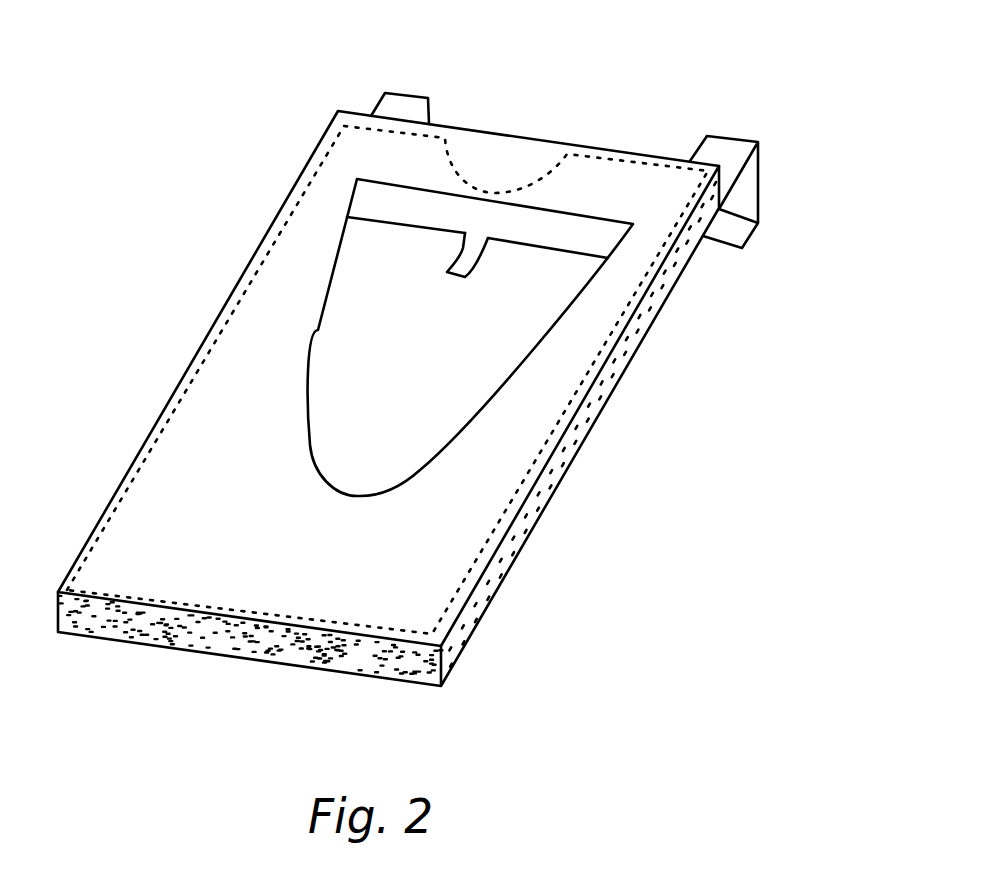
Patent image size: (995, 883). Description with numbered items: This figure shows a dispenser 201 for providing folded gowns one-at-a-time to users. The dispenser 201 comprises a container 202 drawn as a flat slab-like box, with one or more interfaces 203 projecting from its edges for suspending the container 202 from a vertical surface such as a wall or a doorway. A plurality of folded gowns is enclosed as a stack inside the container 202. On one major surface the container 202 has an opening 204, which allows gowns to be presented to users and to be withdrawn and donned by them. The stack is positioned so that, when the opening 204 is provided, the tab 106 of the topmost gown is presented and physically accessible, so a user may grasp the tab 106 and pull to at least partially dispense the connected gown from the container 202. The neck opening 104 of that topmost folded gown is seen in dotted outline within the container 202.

The dispenser 201 is at (690, 436).
The container 202 is at (206, 338).
The interface 203 is at (400, 100).
The neck opening 104 is at (483, 186).
The opening 204 is at (538, 207).
The tab 106 is at (458, 257).